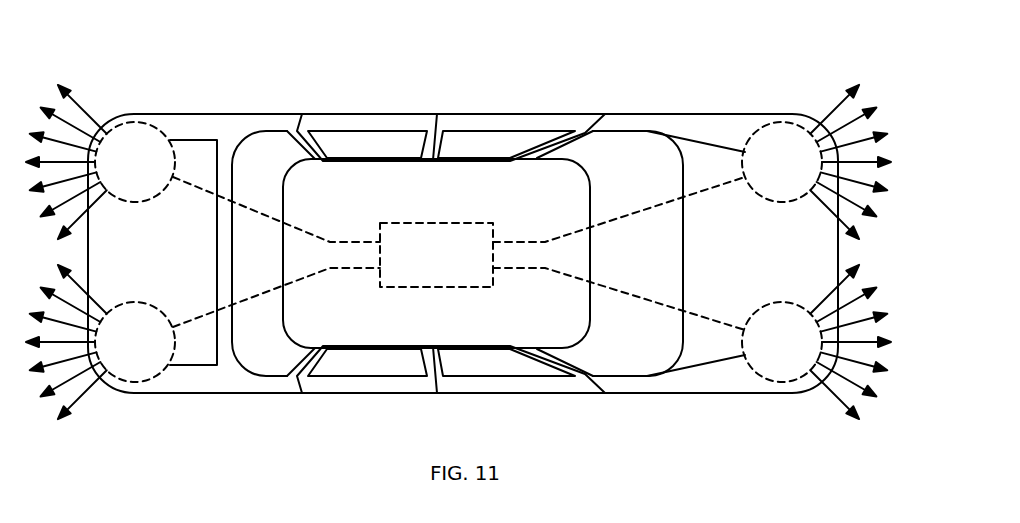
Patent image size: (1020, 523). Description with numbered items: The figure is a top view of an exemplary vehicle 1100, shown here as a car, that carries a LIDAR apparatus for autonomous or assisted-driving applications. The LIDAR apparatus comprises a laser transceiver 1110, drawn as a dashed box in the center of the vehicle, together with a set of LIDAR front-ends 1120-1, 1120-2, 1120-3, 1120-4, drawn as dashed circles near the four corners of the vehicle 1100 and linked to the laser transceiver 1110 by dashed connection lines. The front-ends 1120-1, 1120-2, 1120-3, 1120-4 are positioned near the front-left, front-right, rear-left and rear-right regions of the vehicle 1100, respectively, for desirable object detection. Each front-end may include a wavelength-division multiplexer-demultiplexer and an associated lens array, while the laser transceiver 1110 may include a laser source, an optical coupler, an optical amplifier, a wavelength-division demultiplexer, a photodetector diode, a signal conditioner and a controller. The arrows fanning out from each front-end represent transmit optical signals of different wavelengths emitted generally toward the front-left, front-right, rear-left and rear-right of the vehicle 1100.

The vehicle 1100 is at (450, 50).
The laser transceiver 1110 is at (435, 222).
The LIDAR front-end 1120-1 is at (779, 122).
The LIDAR front-end 1120-2 is at (782, 382).
The LIDAR front-end 1120-3 is at (143, 122).
The LIDAR front-end 1120-4 is at (148, 382).